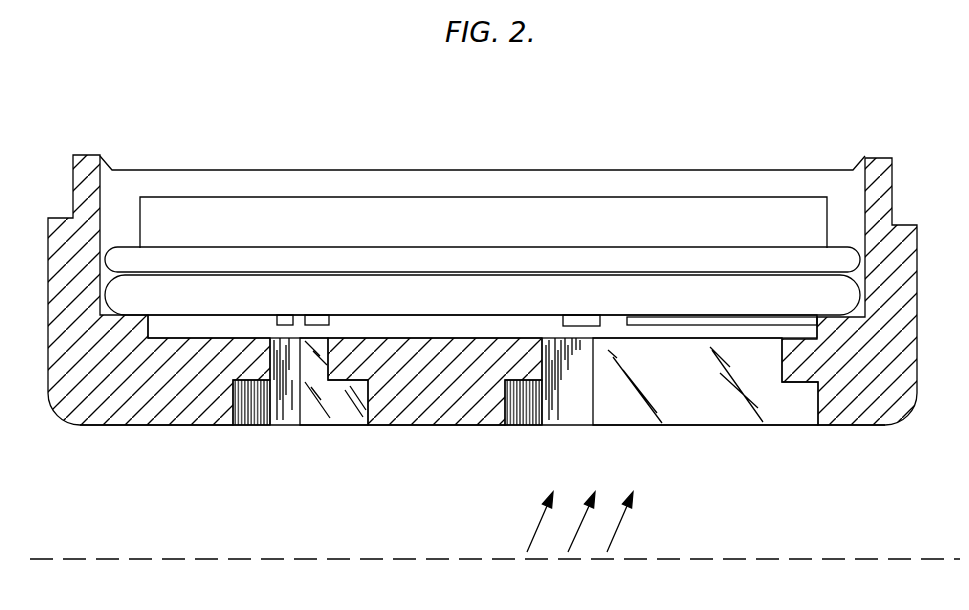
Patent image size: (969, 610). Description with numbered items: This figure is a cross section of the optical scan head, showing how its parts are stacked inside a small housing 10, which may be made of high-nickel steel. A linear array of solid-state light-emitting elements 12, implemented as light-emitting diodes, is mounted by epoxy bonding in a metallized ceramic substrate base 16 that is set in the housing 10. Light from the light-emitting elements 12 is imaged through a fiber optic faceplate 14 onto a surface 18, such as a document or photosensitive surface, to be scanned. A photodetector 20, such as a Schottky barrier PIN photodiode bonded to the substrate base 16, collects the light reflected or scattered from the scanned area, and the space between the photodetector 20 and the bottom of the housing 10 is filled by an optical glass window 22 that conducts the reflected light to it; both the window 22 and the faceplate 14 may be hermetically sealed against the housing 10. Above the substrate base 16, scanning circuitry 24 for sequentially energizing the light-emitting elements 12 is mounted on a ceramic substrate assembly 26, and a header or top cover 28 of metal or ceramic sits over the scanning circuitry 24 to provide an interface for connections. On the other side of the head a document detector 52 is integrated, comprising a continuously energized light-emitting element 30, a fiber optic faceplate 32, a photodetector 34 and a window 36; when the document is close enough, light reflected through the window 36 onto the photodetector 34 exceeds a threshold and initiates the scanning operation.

The housing 10 is at (875, 407).
The light-emitting elements 12 is at (572, 315).
The fiber optic faceplate 14 is at (548, 408).
The substrate base 16 is at (648, 290).
The surface 18 is at (470, 558).
The photodetector 20 is at (690, 317).
The window 22 is at (640, 407).
The scanning circuitry 24 is at (362, 207).
The substrate assembly 26 is at (712, 252).
The top cover 28 is at (263, 177).
The light-emitting element 30 is at (285, 314).
The fiber optic faceplate 32 is at (263, 410).
The photodetector 34 is at (325, 314).
The window 36 is at (340, 410).
The document detector 52 is at (245, 432).